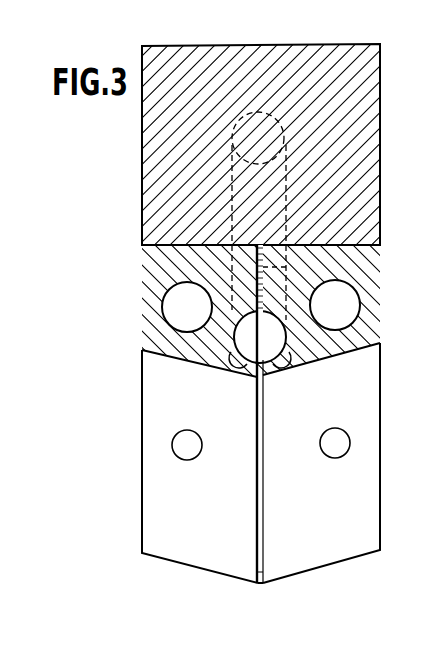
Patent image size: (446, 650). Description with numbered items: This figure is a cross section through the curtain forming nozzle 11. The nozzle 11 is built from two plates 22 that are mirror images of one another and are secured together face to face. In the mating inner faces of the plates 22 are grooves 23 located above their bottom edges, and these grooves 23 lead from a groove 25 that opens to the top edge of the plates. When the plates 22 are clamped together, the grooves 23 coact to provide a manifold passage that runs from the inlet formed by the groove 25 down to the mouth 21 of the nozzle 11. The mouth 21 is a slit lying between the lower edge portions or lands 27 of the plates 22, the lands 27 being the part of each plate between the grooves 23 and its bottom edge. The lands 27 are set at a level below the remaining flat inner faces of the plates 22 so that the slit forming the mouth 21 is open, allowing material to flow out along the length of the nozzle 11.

The body 11 is at (360, 480).
The mouth 21 is at (260, 583).
The plates 22 is at (162, 402).
The grooves 23 is at (244, 366).
The groove 25 is at (300, 268).
The lands 27 is at (257, 494).